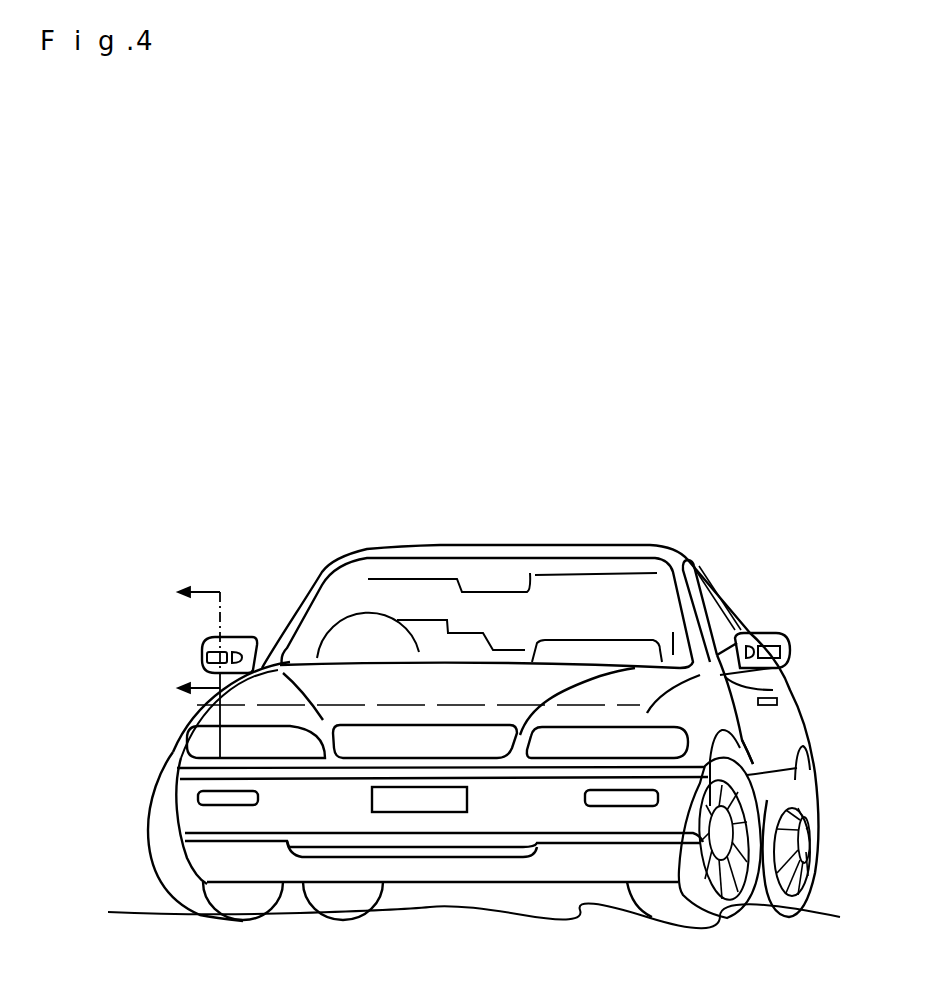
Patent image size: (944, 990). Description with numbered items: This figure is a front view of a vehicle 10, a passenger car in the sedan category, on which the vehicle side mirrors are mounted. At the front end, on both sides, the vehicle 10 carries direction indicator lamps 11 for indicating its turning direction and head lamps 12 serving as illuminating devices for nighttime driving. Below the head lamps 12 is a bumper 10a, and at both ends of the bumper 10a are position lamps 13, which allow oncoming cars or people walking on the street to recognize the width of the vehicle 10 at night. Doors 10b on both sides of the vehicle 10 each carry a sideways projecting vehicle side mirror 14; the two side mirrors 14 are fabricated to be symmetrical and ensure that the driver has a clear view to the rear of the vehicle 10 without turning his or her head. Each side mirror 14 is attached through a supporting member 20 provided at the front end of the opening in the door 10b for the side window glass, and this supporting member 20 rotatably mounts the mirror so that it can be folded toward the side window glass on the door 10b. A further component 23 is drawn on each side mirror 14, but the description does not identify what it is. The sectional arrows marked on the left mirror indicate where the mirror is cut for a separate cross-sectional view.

The vehicle 10 is at (300, 382).
The bumper 10a is at (422, 825).
The door 10b is at (778, 763).
The direction indicator lamp 11 is at (200, 741).
The head lamp 12 is at (243, 740).
The position lamp 13 is at (231, 800).
The vehicle side mirror 14 is at (243, 639).
The supporting member 20 is at (774, 690).
The mirror lamp 23 is at (218, 657).